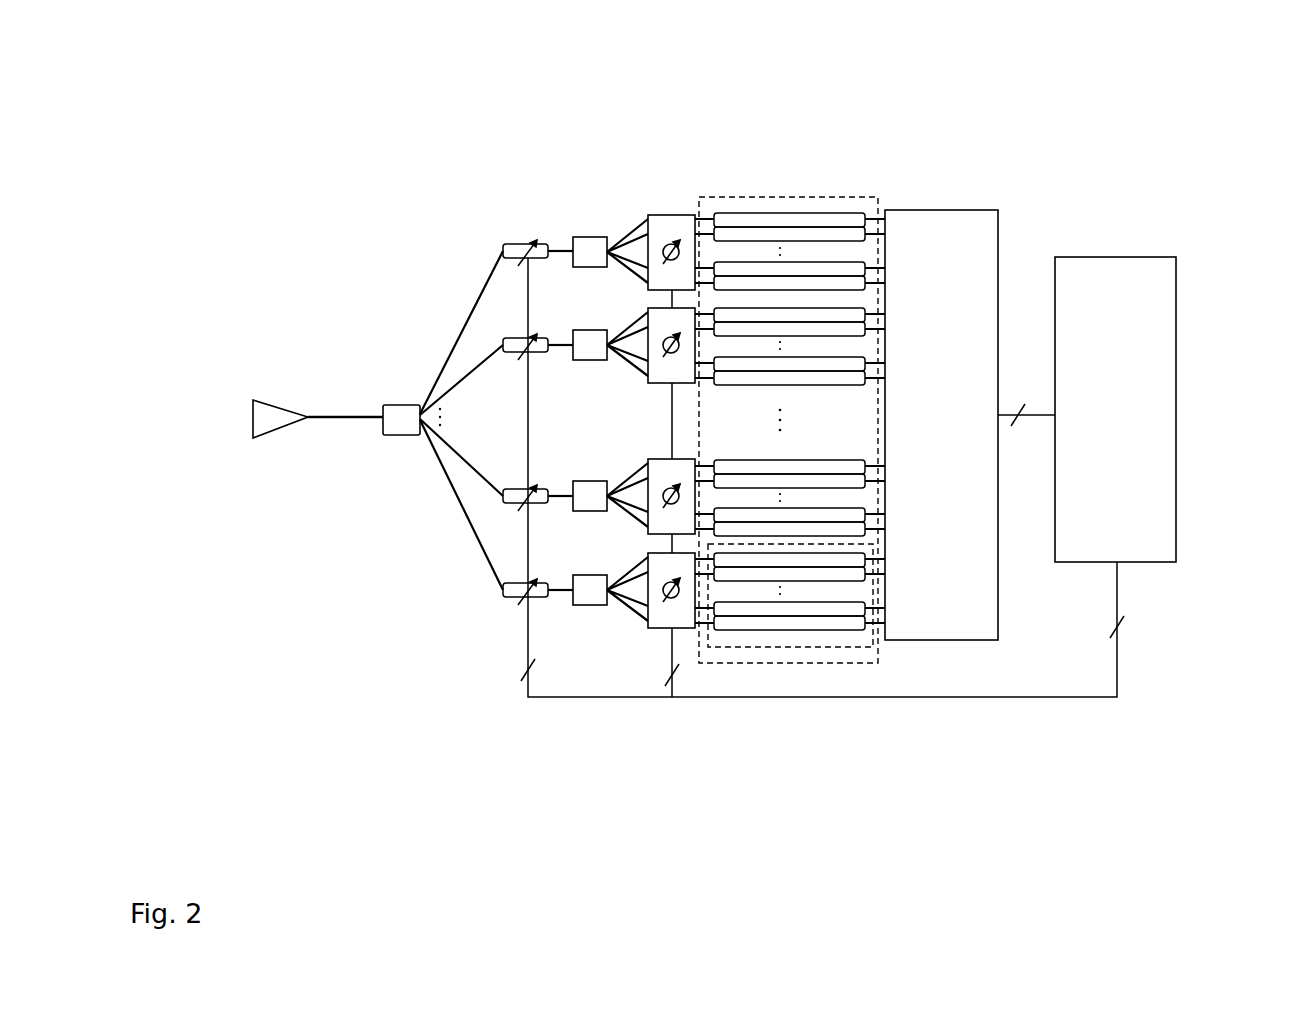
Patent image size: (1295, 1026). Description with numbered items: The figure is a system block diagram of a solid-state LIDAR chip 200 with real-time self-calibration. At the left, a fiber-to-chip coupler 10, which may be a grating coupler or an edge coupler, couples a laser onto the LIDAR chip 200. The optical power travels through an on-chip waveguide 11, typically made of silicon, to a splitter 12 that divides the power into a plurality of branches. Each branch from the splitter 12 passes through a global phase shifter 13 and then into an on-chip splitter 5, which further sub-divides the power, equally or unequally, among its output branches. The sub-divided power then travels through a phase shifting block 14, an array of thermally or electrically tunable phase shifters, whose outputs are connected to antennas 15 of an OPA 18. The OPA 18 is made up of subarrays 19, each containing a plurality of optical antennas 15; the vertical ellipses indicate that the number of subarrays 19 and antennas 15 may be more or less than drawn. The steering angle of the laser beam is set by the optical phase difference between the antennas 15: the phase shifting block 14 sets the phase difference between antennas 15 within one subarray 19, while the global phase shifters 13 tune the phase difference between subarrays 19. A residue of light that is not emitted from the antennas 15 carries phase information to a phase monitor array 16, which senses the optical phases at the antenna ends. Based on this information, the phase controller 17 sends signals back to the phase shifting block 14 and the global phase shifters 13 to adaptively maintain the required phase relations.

The LIDAR chip 200 is at (1166, 49).
The fiber-to-chip coupler 10 is at (262, 410).
The on-chip waveguide 11 is at (343, 410).
The splitter 12 is at (405, 412).
The global phase shifter 13 is at (513, 246).
The on-chip splitter 5 is at (588, 250).
The phase shifting block 14 is at (670, 225).
The antennas 15 is at (800, 218).
The phase monitor array 16 is at (945, 225).
The phase controller 17 is at (1085, 272).
The OPA 18 is at (850, 198).
The subarray 19 is at (797, 648).